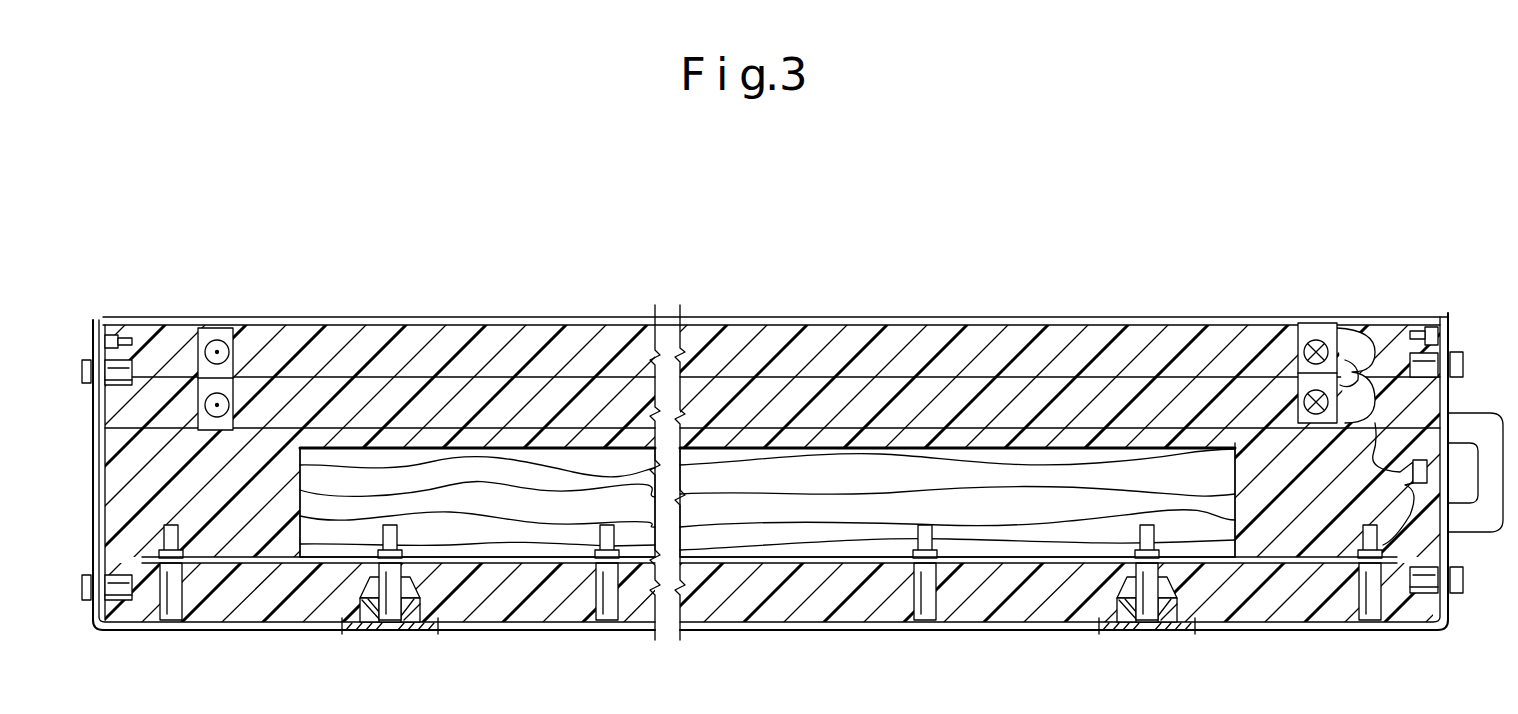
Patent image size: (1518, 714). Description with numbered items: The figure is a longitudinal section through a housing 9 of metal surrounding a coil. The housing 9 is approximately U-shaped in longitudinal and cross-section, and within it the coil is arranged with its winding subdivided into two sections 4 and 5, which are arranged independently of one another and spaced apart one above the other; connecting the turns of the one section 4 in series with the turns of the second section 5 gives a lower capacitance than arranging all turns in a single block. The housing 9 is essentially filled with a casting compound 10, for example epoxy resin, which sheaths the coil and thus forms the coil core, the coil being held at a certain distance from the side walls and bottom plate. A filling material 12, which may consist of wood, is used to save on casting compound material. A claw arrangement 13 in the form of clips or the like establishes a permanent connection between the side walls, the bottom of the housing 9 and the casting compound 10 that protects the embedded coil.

The coil winding section 4 is at (230, 385).
The coil winding section 5 is at (218, 345).
The housing 9 is at (93, 320).
The casting compound 10 is at (160, 400).
The filling material 12 is at (860, 478).
The claw arrangement 13 is at (607, 622).